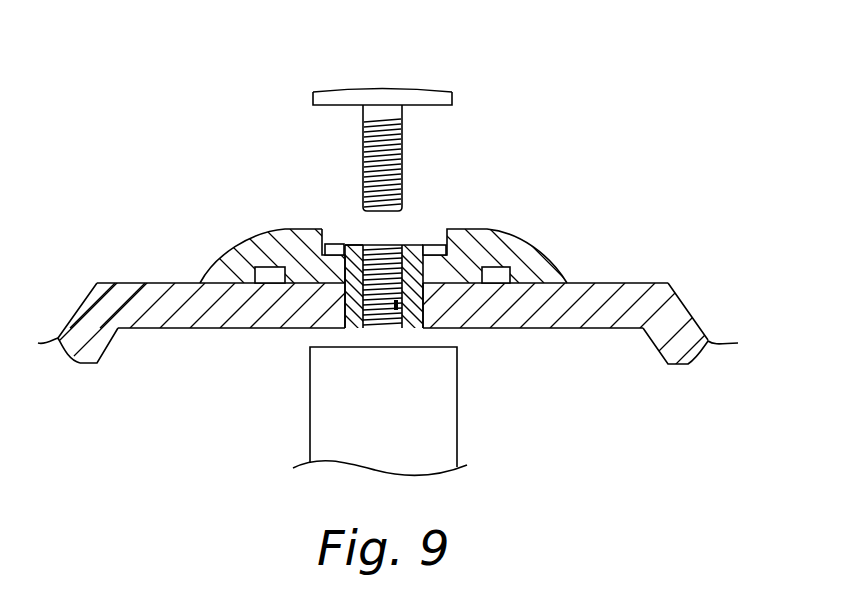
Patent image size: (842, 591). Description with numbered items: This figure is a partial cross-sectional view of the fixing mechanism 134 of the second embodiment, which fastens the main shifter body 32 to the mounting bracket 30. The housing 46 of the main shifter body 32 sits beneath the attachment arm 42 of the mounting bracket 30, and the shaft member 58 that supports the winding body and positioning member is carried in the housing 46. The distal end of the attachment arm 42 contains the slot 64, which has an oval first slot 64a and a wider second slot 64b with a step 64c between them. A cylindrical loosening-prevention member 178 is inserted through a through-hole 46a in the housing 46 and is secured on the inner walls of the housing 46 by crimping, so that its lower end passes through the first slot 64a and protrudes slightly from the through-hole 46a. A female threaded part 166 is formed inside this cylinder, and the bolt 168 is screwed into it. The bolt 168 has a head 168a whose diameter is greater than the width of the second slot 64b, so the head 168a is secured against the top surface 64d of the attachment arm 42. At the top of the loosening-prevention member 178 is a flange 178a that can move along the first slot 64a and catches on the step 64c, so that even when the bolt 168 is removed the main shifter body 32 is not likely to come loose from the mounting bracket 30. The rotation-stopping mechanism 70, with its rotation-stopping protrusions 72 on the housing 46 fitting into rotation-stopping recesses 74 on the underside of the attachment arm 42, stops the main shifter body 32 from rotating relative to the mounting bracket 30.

The mounting bracket 30 is at (395, 241).
The main shifter body 32 is at (695, 296).
The attachment arm 42 is at (533, 257).
The shifter housing 46 is at (607, 292).
The through-hole 46a is at (343, 328).
The shaft member 58 is at (448, 430).
The slot 64 is at (380, 290).
The first slot 64a is at (345, 285).
The second slot 64b is at (327, 243).
The step 64c is at (337, 244).
The top surface 64d is at (320, 229).
The rotation-stopping mechanism 70 is at (248, 176).
The rotation-stopping protrusions 72 is at (262, 259).
The rotation-stopping recesses 74 is at (248, 282).
The fixing mechanism 134 is at (475, 105).
The female threaded part 166 is at (405, 320).
The bolt 168 is at (430, 52).
The head 168a is at (386, 96).
The loosening-prevention member 178 is at (525, 201).
The flange 178a is at (425, 250).